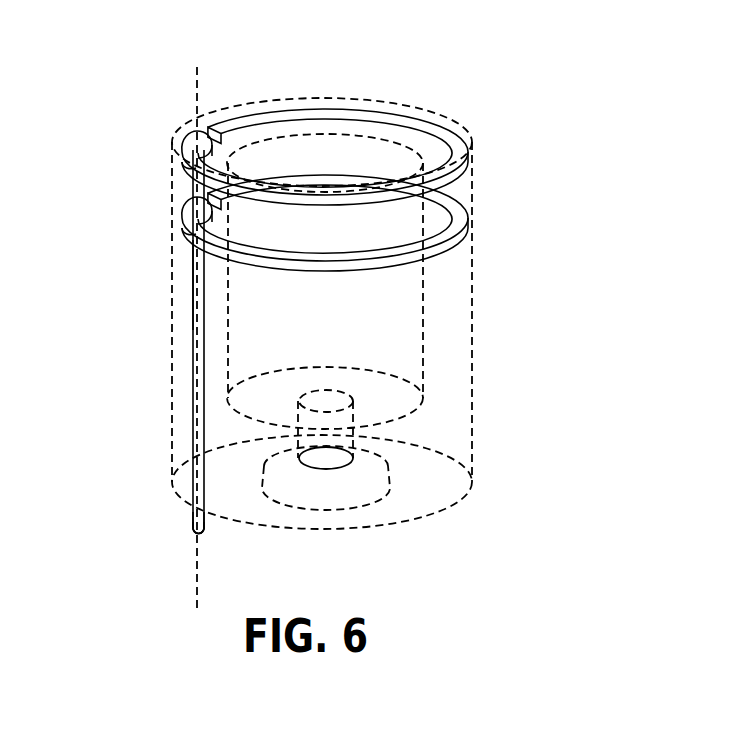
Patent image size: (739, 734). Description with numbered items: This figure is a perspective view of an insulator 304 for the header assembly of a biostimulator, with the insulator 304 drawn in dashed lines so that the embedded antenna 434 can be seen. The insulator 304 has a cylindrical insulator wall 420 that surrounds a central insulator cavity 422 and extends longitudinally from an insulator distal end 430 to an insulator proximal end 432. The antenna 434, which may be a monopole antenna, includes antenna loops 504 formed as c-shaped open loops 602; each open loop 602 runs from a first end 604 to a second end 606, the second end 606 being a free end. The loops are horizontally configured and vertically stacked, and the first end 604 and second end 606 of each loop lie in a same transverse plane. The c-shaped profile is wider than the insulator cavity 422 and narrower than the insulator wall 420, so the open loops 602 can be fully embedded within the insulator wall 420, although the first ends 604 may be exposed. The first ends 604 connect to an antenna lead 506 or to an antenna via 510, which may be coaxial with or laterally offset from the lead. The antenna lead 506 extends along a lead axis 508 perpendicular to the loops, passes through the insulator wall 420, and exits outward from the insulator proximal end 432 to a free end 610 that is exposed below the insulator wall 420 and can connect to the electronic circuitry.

The insulator 304 is at (472, 313).
The insulator distal end 430 is at (418, 110).
The insulator proximal end 432 is at (431, 517).
The insulator wall 420 is at (450, 280).
The insulator cavity 422 is at (329, 147).
The antenna 434 is at (183, 283).
The antenna lead 506 is at (197, 347).
The lead axis 508 is at (197, 573).
The free end 610 is at (197, 537).
The antenna loops 504 is at (458, 213).
The open loops 602 is at (458, 153).
The antenna via 510 is at (195, 191).
The first end 604 is at (187, 135).
The second end 606 is at (218, 127).